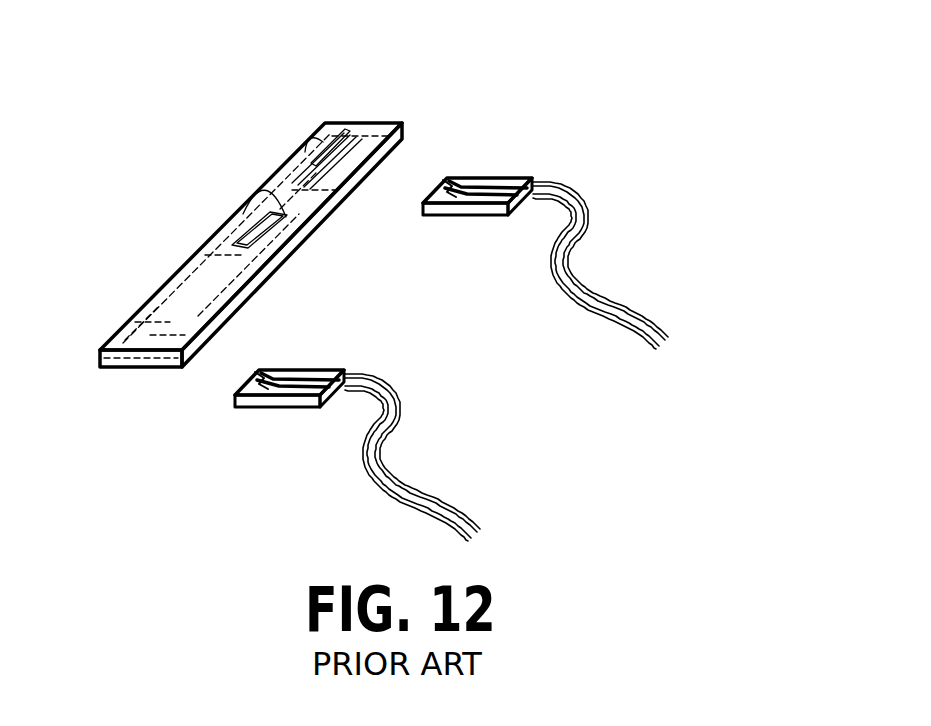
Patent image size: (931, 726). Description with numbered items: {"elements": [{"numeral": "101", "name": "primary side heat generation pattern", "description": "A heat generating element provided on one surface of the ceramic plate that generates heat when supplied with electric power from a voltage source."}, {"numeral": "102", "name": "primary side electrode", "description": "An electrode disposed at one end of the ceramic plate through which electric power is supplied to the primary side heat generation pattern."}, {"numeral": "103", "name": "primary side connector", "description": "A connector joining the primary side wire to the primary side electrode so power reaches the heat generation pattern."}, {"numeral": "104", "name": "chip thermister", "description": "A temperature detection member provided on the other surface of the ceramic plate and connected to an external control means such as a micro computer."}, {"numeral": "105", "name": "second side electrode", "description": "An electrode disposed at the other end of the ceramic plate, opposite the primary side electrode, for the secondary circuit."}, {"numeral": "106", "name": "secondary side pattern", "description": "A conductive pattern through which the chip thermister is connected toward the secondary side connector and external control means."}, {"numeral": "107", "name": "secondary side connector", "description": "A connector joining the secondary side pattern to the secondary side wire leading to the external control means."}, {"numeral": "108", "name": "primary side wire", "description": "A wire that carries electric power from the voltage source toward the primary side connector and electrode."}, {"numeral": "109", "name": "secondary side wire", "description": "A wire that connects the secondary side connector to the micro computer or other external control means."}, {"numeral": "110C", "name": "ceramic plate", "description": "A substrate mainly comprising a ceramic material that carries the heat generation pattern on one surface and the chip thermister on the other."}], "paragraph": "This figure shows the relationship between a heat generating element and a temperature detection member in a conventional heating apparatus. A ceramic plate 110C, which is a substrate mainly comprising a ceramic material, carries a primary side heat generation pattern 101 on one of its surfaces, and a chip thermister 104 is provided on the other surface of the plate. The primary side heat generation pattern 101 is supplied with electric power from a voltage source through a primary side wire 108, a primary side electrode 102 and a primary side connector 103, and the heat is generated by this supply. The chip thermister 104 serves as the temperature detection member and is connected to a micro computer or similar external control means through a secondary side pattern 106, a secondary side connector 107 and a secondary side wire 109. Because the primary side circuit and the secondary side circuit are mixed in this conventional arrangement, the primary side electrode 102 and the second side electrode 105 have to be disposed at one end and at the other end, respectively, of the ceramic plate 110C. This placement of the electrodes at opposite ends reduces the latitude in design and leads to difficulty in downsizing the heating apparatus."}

The substrate 101 is at (230, 252).
The optical fiber groove 102 is at (160, 325).
The light receiving element 103 is at (293, 370).
The recess 104 is at (235, 238).
The slot 105 is at (327, 130).
The lens 106 is at (244, 212).
The light emitting element 107 is at (473, 218).
The optical fiber 108 is at (407, 483).
The optical fiber 109 is at (573, 312).
The optical module 110C is at (382, 122).